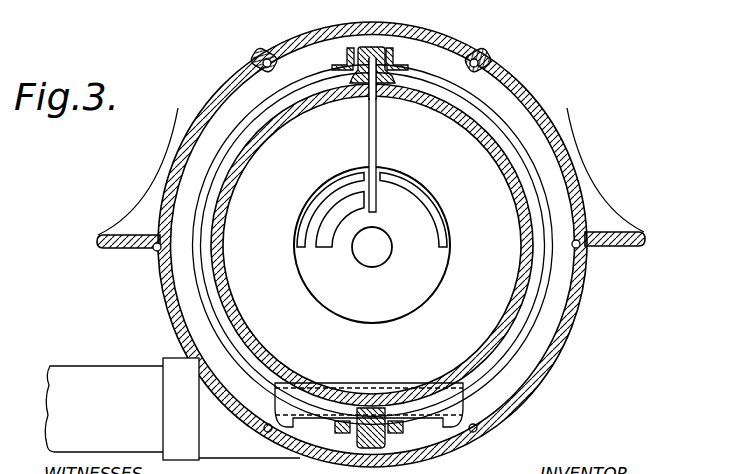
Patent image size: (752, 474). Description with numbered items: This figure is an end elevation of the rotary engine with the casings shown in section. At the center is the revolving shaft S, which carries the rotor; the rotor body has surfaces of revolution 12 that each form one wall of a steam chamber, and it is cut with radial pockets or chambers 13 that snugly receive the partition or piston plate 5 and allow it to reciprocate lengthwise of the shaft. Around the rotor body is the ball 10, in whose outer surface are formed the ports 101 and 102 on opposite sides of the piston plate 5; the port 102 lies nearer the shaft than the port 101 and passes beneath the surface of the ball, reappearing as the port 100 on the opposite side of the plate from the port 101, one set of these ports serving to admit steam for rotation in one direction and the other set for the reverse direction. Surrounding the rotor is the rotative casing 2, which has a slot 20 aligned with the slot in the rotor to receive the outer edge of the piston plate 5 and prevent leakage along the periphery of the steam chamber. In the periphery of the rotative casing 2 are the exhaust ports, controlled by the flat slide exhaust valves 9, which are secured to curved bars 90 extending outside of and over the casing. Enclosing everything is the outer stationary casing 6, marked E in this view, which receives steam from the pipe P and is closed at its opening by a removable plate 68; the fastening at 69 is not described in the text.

The outer casing shell E is at (503, 97).
The stationary casing 6 is at (191, 135).
The rotative casing 2 is at (231, 176).
The surfaces of revolution 12 is at (481, 230).
The ball 10 is at (372, 245).
The central revolving shaft S is at (388, 246).
The port 100 is at (313, 207).
The port 101 is at (429, 199).
The port 102 is at (323, 244).
The pockets or chambers 13 is at (377, 130).
The slot 20 is at (362, 82).
The piston plate 5 is at (376, 108).
The curved bars 90 is at (345, 66).
The exhaust valves 9 is at (304, 420).
The clamp 69 is at (440, 38).
The removable plate 68 is at (100, 239).
The pipe P is at (108, 374).